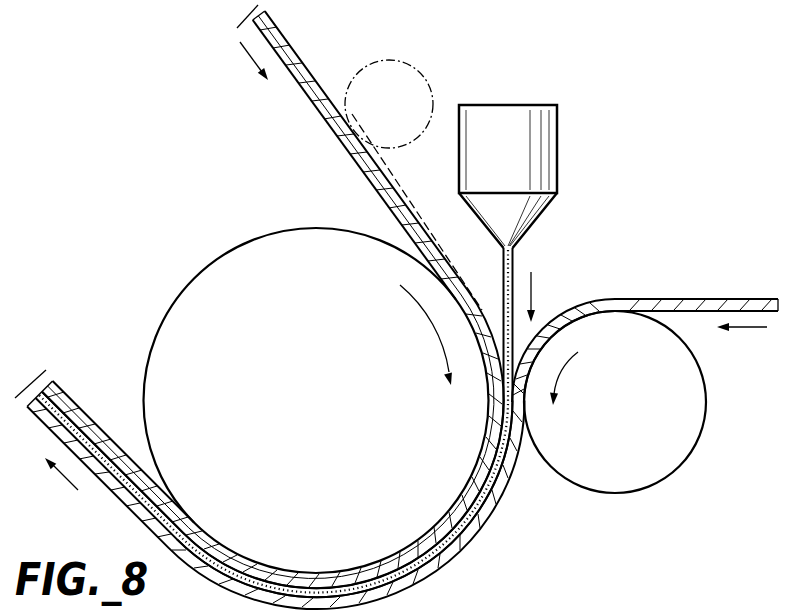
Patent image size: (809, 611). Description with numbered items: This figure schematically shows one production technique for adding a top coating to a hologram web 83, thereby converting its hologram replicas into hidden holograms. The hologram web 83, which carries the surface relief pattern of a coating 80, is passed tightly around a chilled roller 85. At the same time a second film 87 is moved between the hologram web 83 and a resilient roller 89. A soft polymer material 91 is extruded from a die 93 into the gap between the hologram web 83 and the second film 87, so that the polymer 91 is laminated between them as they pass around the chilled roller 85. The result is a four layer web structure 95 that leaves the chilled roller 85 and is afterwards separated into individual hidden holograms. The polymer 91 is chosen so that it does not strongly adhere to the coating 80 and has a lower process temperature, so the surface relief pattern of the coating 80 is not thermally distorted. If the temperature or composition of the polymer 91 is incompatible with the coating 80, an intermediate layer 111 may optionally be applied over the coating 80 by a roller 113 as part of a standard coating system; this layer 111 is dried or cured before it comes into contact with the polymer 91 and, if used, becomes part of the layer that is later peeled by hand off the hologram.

The coating 80 is at (303, 77).
The hologram web 83 is at (247, 18).
The chilled roller 85 is at (222, 278).
The second film 87 is at (687, 312).
The resilient roller 89 is at (675, 443).
The soft polymer material 91 is at (503, 268).
The die 93 is at (541, 159).
The four layer web structure 95 is at (30, 378).
The intermediate layer 111 is at (380, 158).
The roller 113 is at (430, 80).